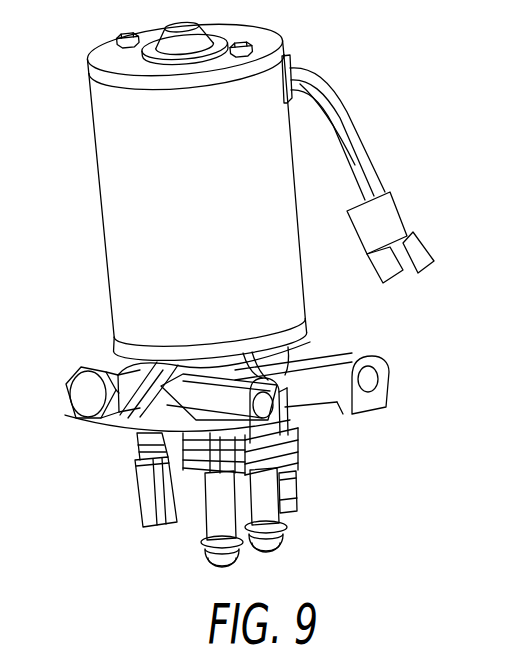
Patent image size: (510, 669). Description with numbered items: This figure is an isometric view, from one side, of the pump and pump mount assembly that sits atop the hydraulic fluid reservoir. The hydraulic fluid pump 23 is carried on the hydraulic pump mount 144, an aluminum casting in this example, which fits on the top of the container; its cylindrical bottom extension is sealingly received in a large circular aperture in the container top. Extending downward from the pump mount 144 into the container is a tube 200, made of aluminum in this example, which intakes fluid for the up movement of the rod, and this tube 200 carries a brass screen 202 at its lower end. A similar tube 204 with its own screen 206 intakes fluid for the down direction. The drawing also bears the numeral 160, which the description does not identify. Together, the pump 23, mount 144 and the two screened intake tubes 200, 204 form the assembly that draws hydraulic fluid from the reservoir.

The motor 160 is at (148, 248).
The hydraulic fluid pump 23 is at (314, 312).
The hydraulic pump mount 144 is at (390, 392).
The tube 200 is at (220, 520).
The screen 202 is at (227, 563).
The tube 204 is at (267, 502).
The screen 206 is at (280, 548).